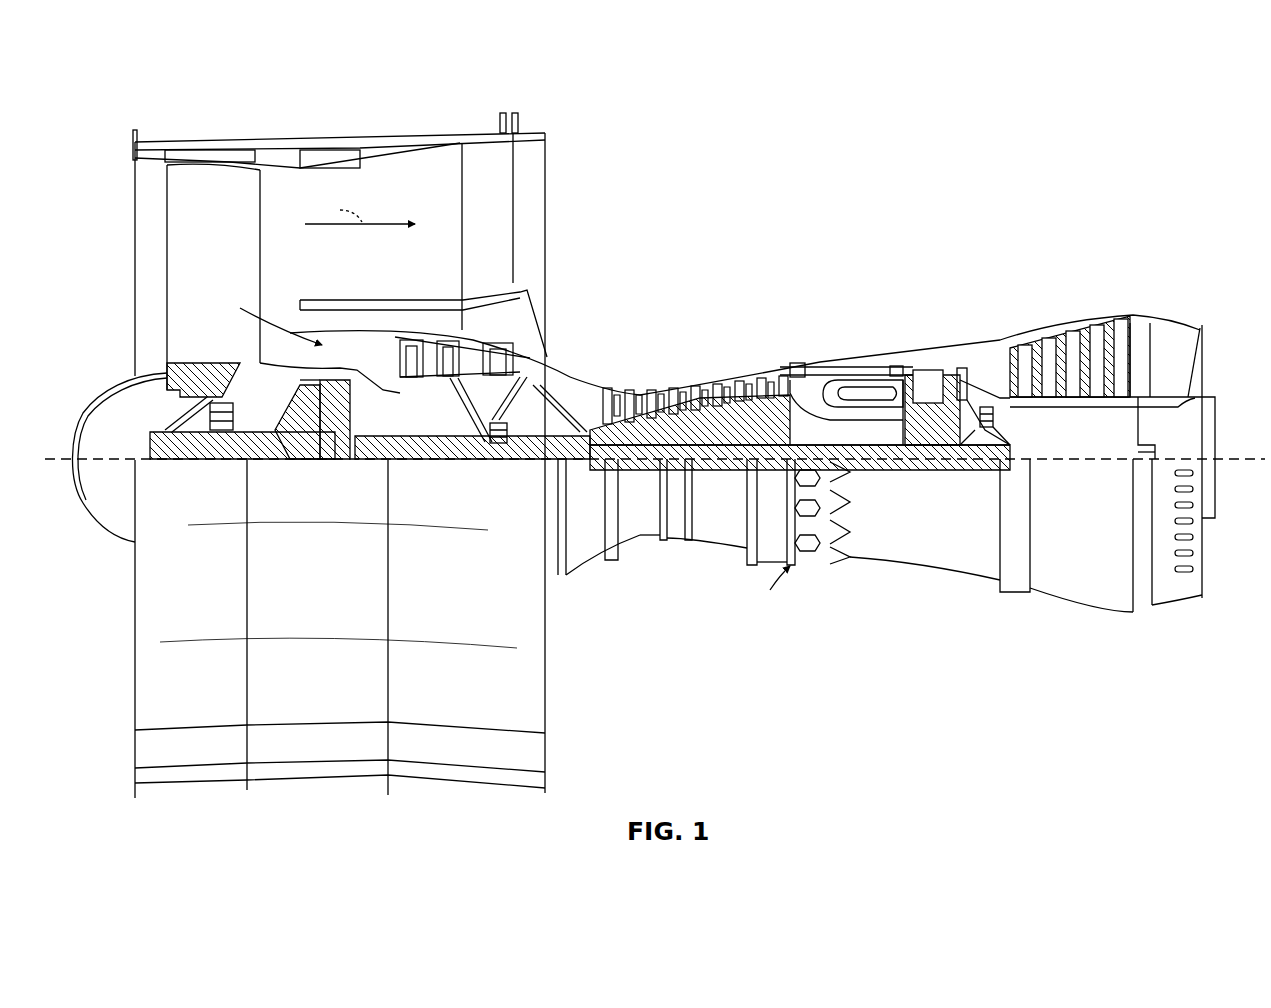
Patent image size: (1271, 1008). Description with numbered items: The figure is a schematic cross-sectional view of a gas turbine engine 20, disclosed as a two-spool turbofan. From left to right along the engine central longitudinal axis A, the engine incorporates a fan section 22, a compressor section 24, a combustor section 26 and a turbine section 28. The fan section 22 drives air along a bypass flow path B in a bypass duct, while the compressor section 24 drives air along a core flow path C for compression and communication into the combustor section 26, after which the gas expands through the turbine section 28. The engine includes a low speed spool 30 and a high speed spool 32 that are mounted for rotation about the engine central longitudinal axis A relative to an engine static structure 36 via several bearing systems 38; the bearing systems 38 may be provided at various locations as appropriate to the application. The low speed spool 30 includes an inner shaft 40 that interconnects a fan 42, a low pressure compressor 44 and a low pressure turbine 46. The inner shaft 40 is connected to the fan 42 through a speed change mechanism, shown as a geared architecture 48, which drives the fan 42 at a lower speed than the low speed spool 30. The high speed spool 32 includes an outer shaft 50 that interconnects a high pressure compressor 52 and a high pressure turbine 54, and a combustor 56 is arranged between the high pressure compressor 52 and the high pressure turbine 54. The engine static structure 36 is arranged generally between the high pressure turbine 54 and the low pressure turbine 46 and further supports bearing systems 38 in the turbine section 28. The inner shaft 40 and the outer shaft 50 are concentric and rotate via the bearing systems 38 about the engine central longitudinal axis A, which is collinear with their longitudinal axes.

The gas turbine engine 20 is at (1090, 142).
The fan section 22 is at (232, 135).
The compressor section 24 is at (700, 290).
The combustor section 26 is at (872, 279).
The turbine section 28 is at (1003, 268).
The low speed spool 30 is at (735, 472).
The high speed spool 32 is at (808, 380).
The engine static structure 36 is at (766, 595).
The bearing systems 38 is at (208, 460).
The inner shaft 40 is at (566, 463).
The fan 42 is at (222, 266).
The low pressure compressor 44 is at (515, 292).
The low pressure turbine 46 is at (1068, 325).
The geared architecture 48 is at (345, 461).
The outer shaft 50 is at (870, 463).
The high pressure compressor 52 is at (680, 392).
The high pressure turbine 54 is at (930, 368).
The combustor 56 is at (860, 382).
The engine central longitudinal axis A is at (1232, 456).
The bypass flow path B is at (360, 208).
The core flow path C is at (275, 313).